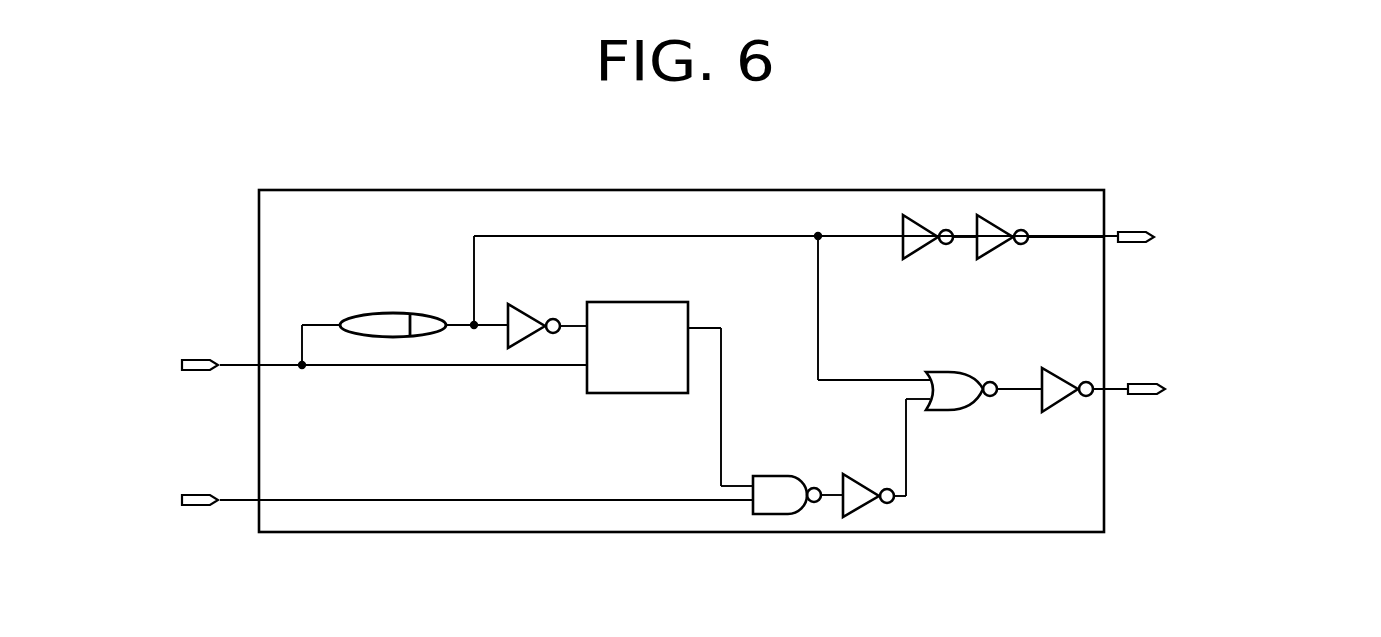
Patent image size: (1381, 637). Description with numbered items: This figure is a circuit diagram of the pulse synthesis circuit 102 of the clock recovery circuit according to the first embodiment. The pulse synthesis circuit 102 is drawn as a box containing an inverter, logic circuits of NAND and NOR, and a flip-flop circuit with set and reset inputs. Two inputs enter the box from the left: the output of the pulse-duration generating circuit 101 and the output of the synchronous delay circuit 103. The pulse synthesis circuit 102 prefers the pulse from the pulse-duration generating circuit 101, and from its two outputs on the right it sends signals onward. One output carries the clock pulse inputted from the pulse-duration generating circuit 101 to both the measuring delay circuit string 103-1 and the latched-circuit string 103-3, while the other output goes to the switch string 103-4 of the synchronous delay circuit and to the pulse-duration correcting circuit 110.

The pulse-duration generating circuit 101 is at (166, 299).
The pulse synthesis circuit 102 is at (674, 361).
The synchronous delay circuit 103 is at (153, 553).
The measuring delay circuit string 103-1 is at (1240, 303).
The latched-circuit string 103-3 is at (1240, 303).
The switch string 103-4 is at (1243, 458).
The pulse-duration correcting circuit 110 is at (1243, 458).